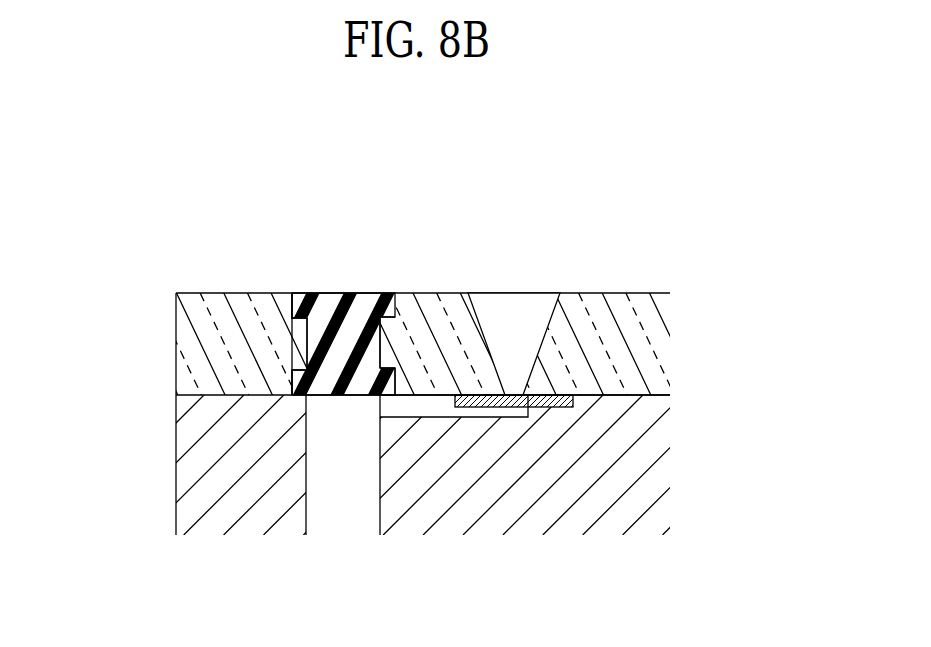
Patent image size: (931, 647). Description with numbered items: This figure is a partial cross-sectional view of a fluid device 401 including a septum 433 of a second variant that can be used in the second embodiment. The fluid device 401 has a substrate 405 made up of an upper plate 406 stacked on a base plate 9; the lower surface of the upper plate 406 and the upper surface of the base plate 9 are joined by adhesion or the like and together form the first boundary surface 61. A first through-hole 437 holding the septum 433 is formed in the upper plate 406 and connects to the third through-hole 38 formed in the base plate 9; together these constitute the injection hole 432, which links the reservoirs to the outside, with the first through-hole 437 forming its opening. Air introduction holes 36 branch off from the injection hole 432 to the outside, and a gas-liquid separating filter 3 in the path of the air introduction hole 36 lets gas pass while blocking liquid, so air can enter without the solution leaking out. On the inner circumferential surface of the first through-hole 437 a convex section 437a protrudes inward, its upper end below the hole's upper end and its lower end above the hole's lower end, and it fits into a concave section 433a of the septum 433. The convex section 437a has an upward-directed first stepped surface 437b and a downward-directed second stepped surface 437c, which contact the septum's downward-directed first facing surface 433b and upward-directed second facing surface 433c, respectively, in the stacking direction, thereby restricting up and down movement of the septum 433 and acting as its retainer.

The fluid device 401 is at (640, 160).
The injection hole 432 is at (283, 172).
The third through-hole 38 is at (310, 450).
The first through-hole 437 is at (291, 293).
The septum 433 is at (308, 298).
The convex section 437a is at (307, 333).
The first stepped surface 437b is at (386, 318).
The first facing surface 433b is at (384, 323).
The air introduction hole 36 is at (536, 281).
The substrate 405 is at (598, 282).
The upper plate 406 is at (635, 343).
The base plate 9 is at (660, 428).
The first boundary surface 61 is at (216, 395).
The gas-liquid separating filter 3 is at (560, 407).
The concave section 433a is at (306, 366).
The second stepped surface 437c is at (389, 393).
The second facing surface 433c is at (384, 372).